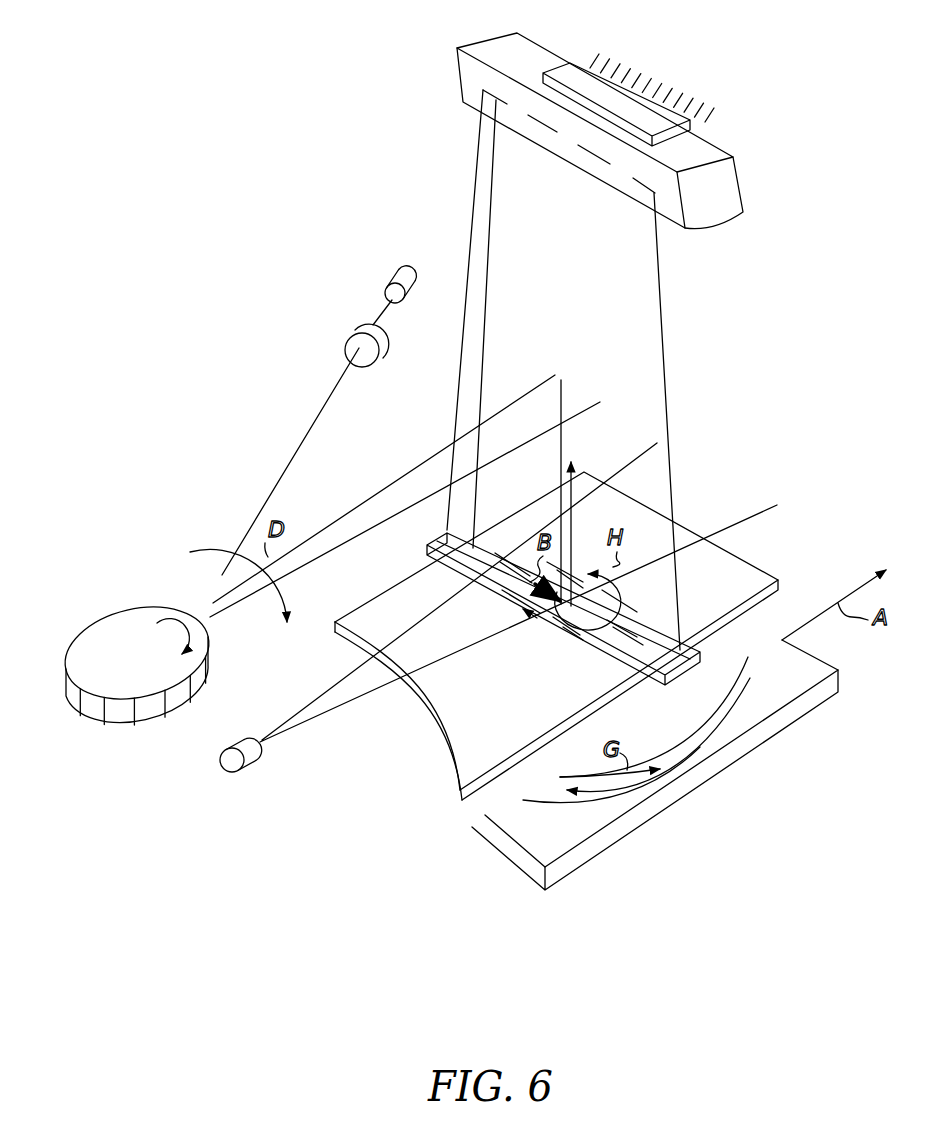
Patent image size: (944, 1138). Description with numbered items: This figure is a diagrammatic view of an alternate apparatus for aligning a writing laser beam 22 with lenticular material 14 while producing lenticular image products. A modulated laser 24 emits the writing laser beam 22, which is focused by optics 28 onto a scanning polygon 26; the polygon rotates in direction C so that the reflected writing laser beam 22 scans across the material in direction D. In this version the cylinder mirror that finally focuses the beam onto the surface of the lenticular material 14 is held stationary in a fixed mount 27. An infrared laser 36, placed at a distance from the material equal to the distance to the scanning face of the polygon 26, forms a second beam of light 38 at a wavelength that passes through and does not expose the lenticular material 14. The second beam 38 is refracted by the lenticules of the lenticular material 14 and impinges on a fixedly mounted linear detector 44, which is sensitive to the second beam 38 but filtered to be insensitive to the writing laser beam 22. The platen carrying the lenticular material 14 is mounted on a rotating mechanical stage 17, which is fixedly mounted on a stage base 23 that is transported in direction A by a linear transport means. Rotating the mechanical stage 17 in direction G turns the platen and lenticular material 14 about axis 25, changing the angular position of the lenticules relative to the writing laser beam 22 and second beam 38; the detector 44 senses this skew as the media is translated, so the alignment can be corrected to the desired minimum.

The lenticular material 14 is at (747, 582).
The rotating mechanical stage 17 is at (700, 748).
The writing laser beam 22 is at (305, 438).
The stage base 23 is at (817, 702).
The modulated laser 24 is at (397, 275).
The axis 25 is at (572, 462).
The scanning polygon 26 is at (93, 633).
The fixed mount 27 is at (673, 100).
The optics 28 is at (343, 348).
The infrared laser 36 is at (238, 773).
The second beam of light 38 is at (322, 695).
The linear detector 44 is at (607, 655).